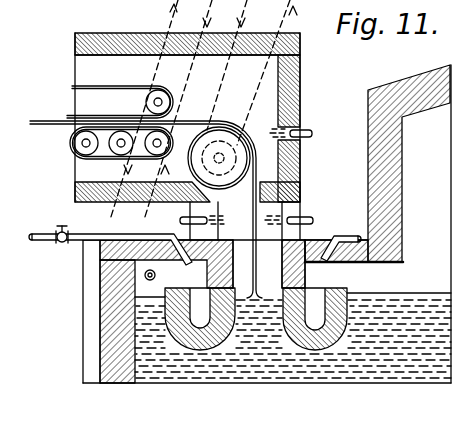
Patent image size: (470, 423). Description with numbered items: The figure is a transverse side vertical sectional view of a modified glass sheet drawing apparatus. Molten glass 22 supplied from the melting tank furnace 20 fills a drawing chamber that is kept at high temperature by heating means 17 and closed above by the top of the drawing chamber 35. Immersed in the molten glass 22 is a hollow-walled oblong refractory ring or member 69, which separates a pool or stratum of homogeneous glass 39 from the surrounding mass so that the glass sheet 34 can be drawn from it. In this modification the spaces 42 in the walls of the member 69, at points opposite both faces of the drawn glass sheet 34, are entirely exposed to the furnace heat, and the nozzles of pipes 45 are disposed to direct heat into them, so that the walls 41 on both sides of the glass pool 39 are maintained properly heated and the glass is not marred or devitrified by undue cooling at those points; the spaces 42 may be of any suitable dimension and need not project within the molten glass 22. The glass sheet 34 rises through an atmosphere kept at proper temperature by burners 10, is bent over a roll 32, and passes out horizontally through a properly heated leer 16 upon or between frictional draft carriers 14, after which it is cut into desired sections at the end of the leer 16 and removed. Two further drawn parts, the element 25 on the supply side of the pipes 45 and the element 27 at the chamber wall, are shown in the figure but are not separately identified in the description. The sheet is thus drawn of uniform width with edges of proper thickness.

The burners 10 is at (312, 131).
The frictional draft carriers 14 is at (73, 86).
The leer 16 is at (302, 73).
The heating means 17 is at (145, 277).
The melting tank furnace 20 is at (404, 163).
The molten glass 22 is at (410, 315).
The valve 25 is at (60, 226).
The tank wall 27 is at (110, 340).
The roll 32 is at (229, 123).
The glass sheet 34 is at (40, 120).
The top of the drawing chamber 35 is at (104, 250).
The glass pool 39 is at (275, 320).
The walls 41 is at (236, 294).
The spaces 42 is at (197, 322).
The pipes 45 is at (33, 233).
The hollow-walled refractory ring 69 is at (324, 352).